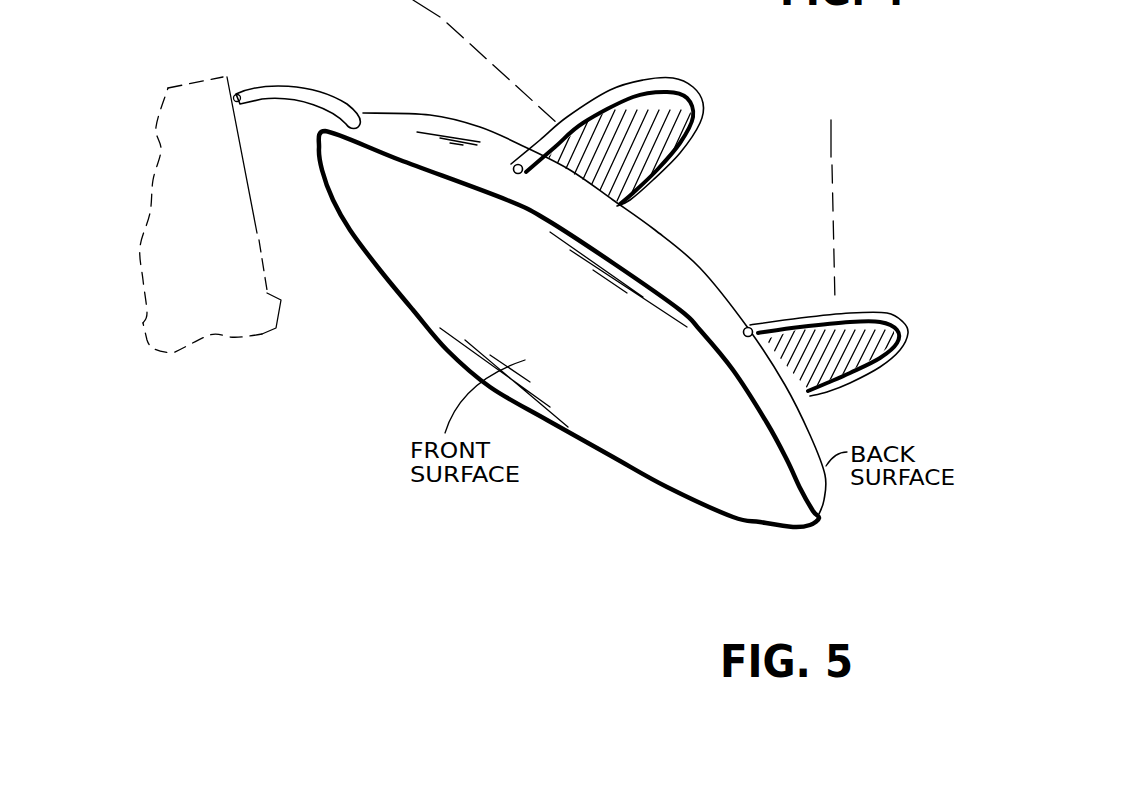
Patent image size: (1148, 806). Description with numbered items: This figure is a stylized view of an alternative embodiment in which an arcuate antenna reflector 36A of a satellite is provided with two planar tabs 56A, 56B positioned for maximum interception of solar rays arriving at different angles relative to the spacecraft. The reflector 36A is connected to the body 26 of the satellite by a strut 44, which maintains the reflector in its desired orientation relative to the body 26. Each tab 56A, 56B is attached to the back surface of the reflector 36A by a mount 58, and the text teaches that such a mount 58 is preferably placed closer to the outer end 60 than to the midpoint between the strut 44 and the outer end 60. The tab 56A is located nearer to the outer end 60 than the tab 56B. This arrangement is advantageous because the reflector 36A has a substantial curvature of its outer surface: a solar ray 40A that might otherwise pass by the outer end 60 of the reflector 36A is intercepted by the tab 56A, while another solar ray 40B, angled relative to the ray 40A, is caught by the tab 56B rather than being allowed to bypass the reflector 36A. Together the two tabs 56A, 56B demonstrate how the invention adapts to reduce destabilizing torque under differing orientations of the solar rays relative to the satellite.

The body 26 is at (281, 301).
The strut 44 is at (287, 87).
The reflector 36A is at (775, 528).
The outer end 60 is at (818, 517).
The tab 56B is at (663, 78).
The solar ray 40B is at (438, 15).
The tab 56A is at (873, 310).
The solar ray 40A is at (833, 160).
The mount 58 is at (514, 163).